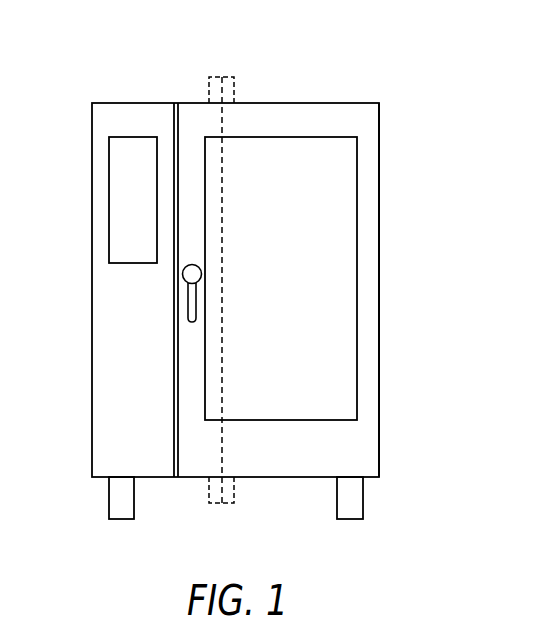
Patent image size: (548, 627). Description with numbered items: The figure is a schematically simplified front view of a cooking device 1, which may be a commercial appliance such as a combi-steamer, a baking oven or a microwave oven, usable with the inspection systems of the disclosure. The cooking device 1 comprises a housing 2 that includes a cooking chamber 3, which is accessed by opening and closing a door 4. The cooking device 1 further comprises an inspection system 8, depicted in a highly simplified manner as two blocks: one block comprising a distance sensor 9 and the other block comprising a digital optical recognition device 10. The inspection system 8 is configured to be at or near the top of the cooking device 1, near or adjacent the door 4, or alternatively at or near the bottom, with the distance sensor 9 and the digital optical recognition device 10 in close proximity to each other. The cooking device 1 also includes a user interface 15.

The cooking device 1 is at (408, 84).
The housing 2 is at (384, 179).
The cooking chamber 3 is at (289, 296).
The door 4 is at (192, 338).
The inspection system 8 is at (221, 72).
The distance sensor 9 is at (235, 85).
The digital optical recognition device 10 is at (208, 85).
The user interface 15 is at (124, 207).